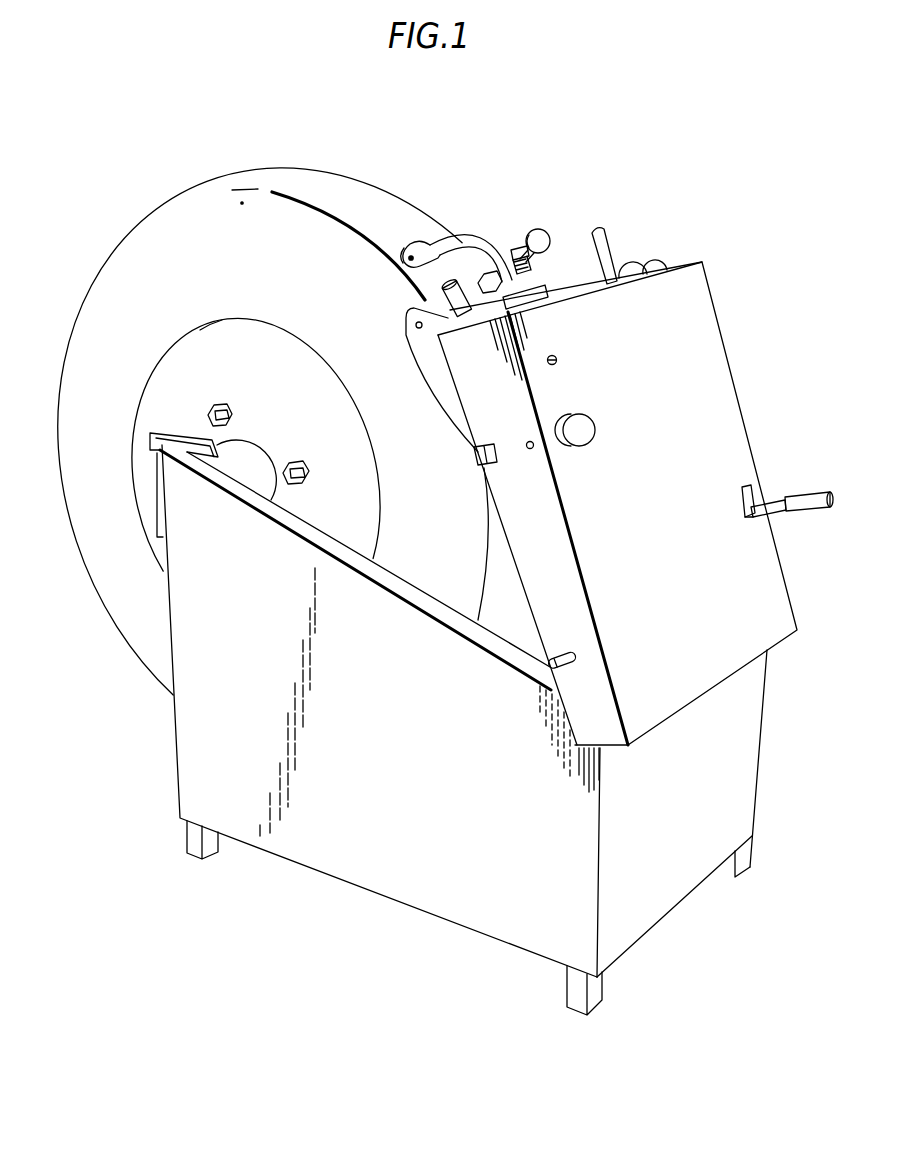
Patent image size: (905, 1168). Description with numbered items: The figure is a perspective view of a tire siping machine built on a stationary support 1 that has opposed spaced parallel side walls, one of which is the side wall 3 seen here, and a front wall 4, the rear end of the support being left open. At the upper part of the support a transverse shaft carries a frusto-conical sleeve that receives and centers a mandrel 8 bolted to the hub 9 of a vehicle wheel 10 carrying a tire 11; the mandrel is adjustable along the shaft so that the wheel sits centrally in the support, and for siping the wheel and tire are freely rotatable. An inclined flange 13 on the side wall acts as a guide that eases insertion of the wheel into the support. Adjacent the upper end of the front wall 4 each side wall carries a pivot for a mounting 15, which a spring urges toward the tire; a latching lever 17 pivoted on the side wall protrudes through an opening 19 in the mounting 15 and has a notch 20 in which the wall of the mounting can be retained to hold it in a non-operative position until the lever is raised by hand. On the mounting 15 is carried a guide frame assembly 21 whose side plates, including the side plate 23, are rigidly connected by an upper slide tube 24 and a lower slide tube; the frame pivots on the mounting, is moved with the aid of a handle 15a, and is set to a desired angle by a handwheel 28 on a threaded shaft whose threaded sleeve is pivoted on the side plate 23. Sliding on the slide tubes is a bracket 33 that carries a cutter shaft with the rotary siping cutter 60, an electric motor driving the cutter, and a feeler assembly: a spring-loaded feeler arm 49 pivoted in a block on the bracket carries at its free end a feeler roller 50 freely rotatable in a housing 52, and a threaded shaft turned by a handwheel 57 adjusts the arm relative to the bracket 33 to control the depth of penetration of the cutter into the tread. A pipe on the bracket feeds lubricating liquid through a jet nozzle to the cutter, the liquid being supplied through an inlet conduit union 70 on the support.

The stationary support 1 is at (461, 730).
The side wall 3 is at (178, 728).
The front wall 4 is at (673, 893).
The mandrel 8 is at (262, 470).
The hub 9 is at (300, 385).
The vehicle wheel 10 is at (209, 319).
The tire 11 is at (130, 230).
The flange 13 is at (155, 450).
The mounting 15 is at (693, 348).
The handle 15a is at (600, 230).
The latching lever 17 is at (778, 512).
The opening 19 is at (755, 488).
The notch 20 is at (752, 524).
The guide frame assembly 21 is at (637, 254).
The side plate 23 is at (437, 374).
The upper slide tube 24 is at (475, 310).
The handwheel 28 is at (596, 427).
The bracket 33 is at (531, 300).
The feeler arm 49 is at (468, 237).
The feeler roller 50 is at (403, 265).
The housing 52 is at (424, 242).
The handwheel 57 is at (546, 236).
The cutter 60 is at (497, 262).
The inlet conduit union 70 is at (566, 667).